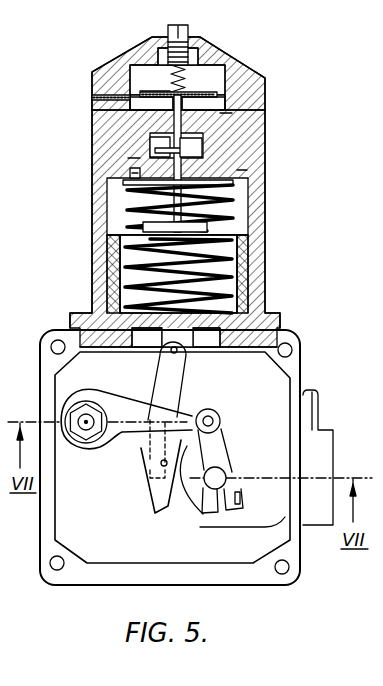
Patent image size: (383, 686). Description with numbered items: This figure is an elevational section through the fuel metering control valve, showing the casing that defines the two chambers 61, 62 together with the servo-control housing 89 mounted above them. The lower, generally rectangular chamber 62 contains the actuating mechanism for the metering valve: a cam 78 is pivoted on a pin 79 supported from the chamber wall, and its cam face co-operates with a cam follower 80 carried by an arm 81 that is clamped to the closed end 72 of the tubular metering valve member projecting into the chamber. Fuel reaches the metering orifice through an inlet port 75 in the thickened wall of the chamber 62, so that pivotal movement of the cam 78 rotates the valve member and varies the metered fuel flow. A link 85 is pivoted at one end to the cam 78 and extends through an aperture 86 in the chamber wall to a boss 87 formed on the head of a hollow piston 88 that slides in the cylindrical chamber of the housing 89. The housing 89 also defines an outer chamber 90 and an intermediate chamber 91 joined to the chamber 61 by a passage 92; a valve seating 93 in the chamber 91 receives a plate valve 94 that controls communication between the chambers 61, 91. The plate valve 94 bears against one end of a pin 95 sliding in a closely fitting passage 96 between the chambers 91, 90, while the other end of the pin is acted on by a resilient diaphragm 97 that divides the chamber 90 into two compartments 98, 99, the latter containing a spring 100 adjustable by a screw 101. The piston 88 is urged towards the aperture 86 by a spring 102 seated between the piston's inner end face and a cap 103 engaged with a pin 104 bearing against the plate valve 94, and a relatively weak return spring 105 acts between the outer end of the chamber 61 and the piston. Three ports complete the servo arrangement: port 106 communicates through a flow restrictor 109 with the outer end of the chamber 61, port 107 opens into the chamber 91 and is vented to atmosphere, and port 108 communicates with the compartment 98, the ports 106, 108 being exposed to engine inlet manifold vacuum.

The chamber 61 is at (235, 202).
The chamber 62 is at (66, 507).
The closed end 72 is at (228, 483).
The inlet port 75 is at (325, 458).
The cam 78 is at (158, 518).
The pin 79 is at (87, 430).
The cam follower 80 is at (215, 411).
The arm 81 is at (219, 446).
The link 85 is at (162, 378).
The aperture 86 is at (208, 346).
The boss 87 is at (186, 347).
The hollow piston 88 is at (242, 253).
The housing 89 is at (266, 171).
The outer chamber 90 is at (230, 82).
The chamber 91 is at (210, 143).
The passage 92 is at (233, 181).
The valve seating 93 is at (237, 170).
The plate valve 94 is at (174, 125).
The pin 95 is at (200, 128).
The passage 96 is at (227, 113).
The resilient diaphragm 97 is at (154, 72).
The compartment 98 is at (140, 101).
The compartment 99 is at (158, 77).
The spring 100 is at (188, 91).
The screw 101 is at (189, 33).
The spring 102 is at (228, 271).
The cap 103 is at (160, 229).
The pin 104 is at (233, 214).
The return spring 105 is at (150, 208).
The port 106 is at (128, 158).
The port 107 is at (150, 141).
The port 108 is at (93, 99).
The flow restrictor 109 is at (130, 170).